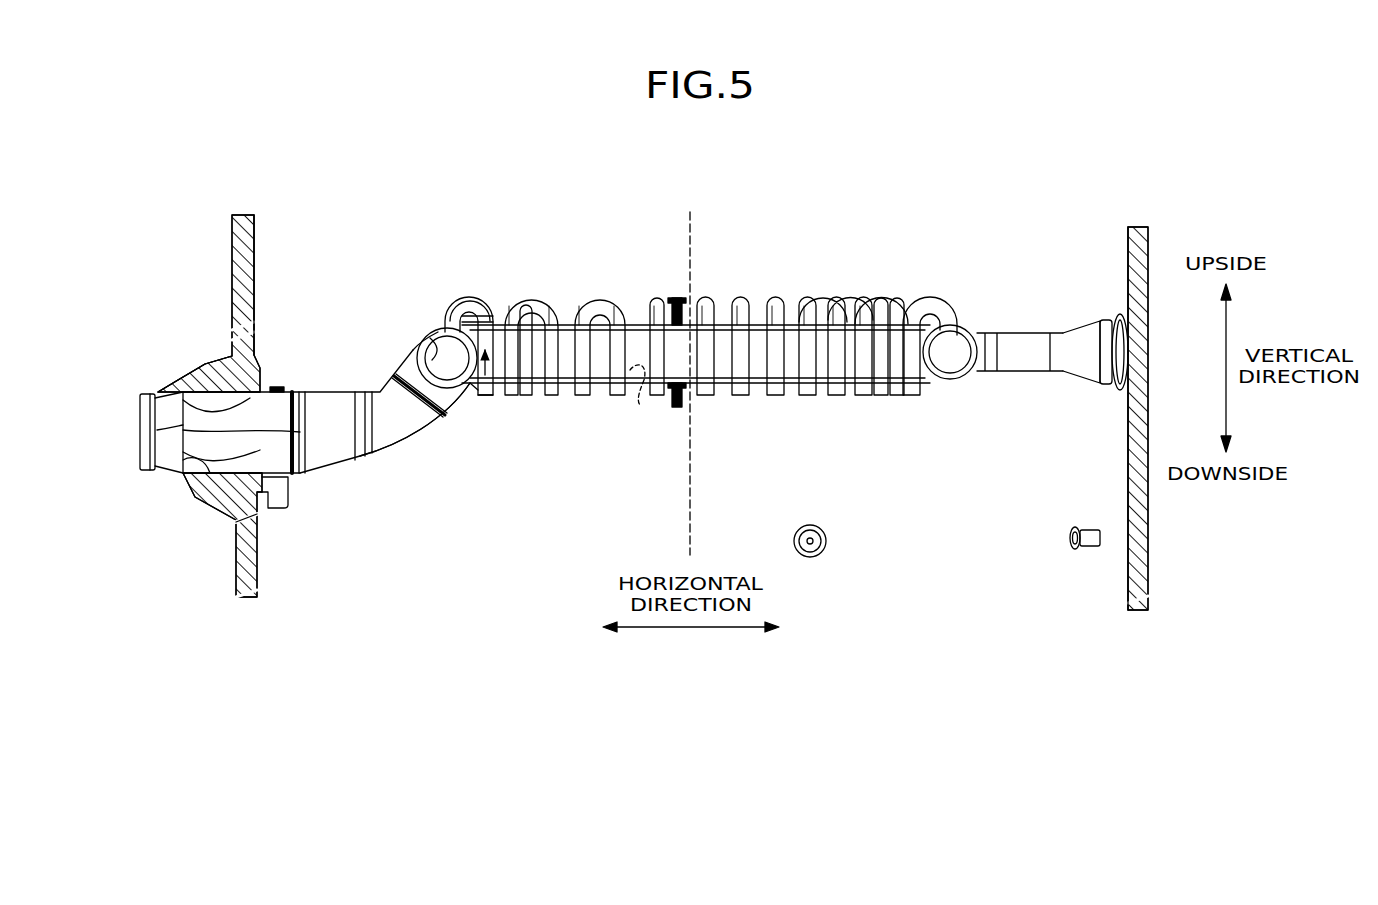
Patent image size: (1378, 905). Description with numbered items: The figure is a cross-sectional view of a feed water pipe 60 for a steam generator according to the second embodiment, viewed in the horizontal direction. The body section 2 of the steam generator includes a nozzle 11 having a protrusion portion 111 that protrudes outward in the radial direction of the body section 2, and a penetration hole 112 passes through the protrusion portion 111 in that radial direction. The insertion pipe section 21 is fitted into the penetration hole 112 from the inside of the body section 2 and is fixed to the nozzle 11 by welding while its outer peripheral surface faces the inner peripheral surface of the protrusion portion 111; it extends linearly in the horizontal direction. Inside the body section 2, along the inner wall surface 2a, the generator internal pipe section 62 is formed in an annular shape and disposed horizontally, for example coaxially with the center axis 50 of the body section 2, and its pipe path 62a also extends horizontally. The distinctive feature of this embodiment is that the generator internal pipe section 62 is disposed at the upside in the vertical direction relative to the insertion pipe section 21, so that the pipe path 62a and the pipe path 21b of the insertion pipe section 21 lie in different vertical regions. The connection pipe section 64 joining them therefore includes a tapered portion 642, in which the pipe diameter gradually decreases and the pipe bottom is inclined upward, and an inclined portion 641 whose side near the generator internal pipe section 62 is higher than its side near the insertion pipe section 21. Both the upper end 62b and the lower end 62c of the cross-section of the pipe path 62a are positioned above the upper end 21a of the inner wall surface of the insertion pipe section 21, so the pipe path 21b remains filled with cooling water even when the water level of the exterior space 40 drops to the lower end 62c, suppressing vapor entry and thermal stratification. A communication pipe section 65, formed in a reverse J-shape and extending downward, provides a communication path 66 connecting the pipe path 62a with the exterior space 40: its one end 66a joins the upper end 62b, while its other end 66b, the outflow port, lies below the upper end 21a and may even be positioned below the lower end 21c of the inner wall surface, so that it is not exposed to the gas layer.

The body section 2 is at (225, 262).
The inner wall surface 2a is at (254, 243).
The nozzle 11 is at (175, 360).
The protrusion portion 111 is at (206, 366).
The penetration hole 112 is at (160, 408).
The insertion pipe section 21 is at (277, 390).
The upper end of the inner wall surface 21a is at (182, 432).
The pipe path 21b is at (178, 465).
The lower end of the inner wall surface 21c is at (195, 466).
The exterior space 40 is at (763, 364).
The center axis 50 is at (690, 371).
The feed water pipe 60 is at (832, 235).
The generator internal pipe section 62 is at (757, 402).
The pipe path 62a is at (640, 395).
The upper end 62b is at (440, 335).
The lower end 62c is at (468, 395).
The connection pipe section 64 is at (367, 481).
The inclined portion 641 is at (443, 440).
The tapered portion 642 is at (330, 475).
The communication pipe section 65 is at (665, 291).
The communication path 66 is at (528, 398).
The one end of the communication path 66a is at (437, 300).
The other end of the communication path 66b is at (482, 398).